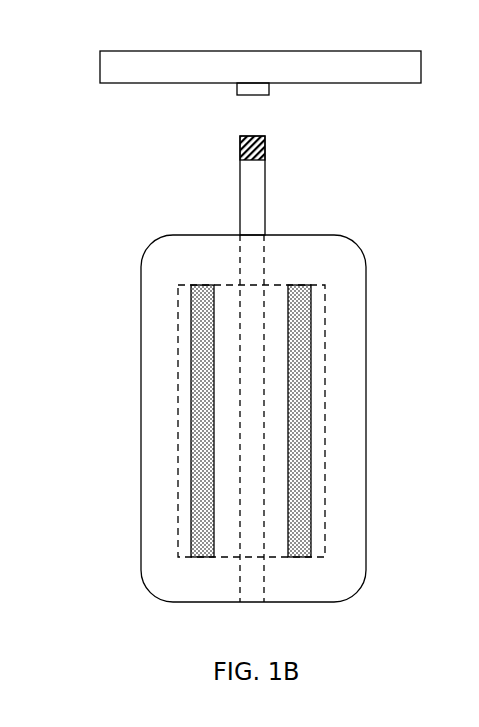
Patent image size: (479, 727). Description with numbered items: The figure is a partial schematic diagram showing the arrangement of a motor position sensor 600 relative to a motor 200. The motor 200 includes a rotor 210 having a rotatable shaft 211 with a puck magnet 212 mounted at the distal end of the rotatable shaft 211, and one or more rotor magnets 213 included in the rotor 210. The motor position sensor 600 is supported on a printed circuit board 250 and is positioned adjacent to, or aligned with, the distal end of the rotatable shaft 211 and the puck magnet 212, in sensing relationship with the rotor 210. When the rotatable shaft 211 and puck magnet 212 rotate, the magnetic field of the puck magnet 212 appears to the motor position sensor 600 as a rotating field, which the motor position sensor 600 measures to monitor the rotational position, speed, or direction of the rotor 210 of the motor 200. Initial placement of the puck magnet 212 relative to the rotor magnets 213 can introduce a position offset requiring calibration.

The printed circuit board 250 is at (100, 51).
The motor position sensor 600 is at (237, 87).
The rotatable shaft 211 is at (265, 210).
The puck magnet 212 is at (240, 145).
The motor 200 is at (366, 511).
The rotor 210 is at (165, 388).
The rotor magnets 213 is at (311, 325).